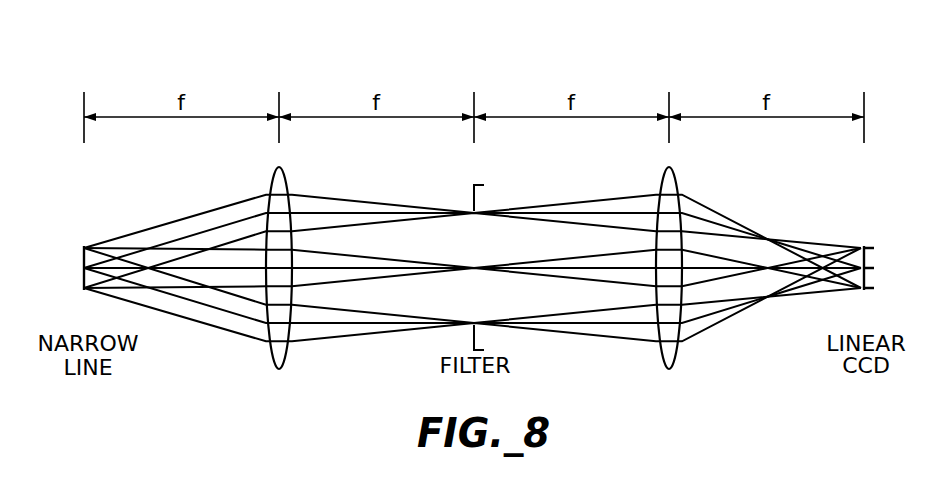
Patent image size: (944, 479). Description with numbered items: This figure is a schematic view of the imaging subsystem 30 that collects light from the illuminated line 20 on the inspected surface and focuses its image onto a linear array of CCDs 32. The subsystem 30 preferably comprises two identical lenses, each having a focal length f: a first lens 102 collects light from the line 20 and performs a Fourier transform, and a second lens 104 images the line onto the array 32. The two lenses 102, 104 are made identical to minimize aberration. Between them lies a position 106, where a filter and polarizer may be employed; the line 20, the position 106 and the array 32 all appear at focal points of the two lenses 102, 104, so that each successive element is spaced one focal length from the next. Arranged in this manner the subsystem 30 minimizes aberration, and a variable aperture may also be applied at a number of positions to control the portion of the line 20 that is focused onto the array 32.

The line 20 is at (82, 257).
The imaging subsystem 30 is at (670, 58).
The linear array of CCDs 32 is at (866, 257).
The lens 102 is at (279, 369).
The lens 104 is at (669, 369).
The position 106 is at (478, 330).